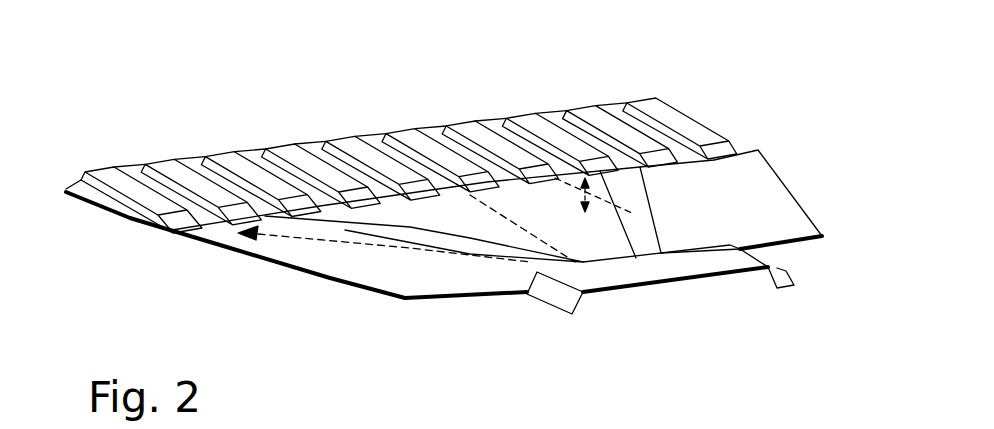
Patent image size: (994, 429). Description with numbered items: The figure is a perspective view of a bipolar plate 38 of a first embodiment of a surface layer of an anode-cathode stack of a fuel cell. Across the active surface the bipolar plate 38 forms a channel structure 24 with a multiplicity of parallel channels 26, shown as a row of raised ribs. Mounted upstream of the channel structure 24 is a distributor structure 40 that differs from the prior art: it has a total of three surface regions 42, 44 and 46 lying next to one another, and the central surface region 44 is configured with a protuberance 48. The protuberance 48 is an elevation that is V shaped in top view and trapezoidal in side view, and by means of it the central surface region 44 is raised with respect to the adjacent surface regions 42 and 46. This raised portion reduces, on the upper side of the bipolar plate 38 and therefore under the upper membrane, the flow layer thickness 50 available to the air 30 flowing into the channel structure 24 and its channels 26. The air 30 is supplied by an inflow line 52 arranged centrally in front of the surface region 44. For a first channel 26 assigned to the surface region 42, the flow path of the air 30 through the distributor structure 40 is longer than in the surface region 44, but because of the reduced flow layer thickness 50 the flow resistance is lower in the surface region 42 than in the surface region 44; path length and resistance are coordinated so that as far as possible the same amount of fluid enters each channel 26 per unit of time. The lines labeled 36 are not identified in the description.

The channel structure 24 is at (806, 152).
The channels 26 is at (129, 174).
The air 30 is at (752, 332).
The side flanges 36 is at (297, 238).
The bipolar plate 38 is at (235, 101).
The distributor structure 40 is at (807, 149).
The surface region 42 is at (363, 259).
The central surface region 44 is at (519, 224).
The surface region 46 is at (758, 210).
The protuberance 48 is at (467, 222).
The flow layer thickness 50 is at (575, 205).
The inflow line 52 is at (610, 302).